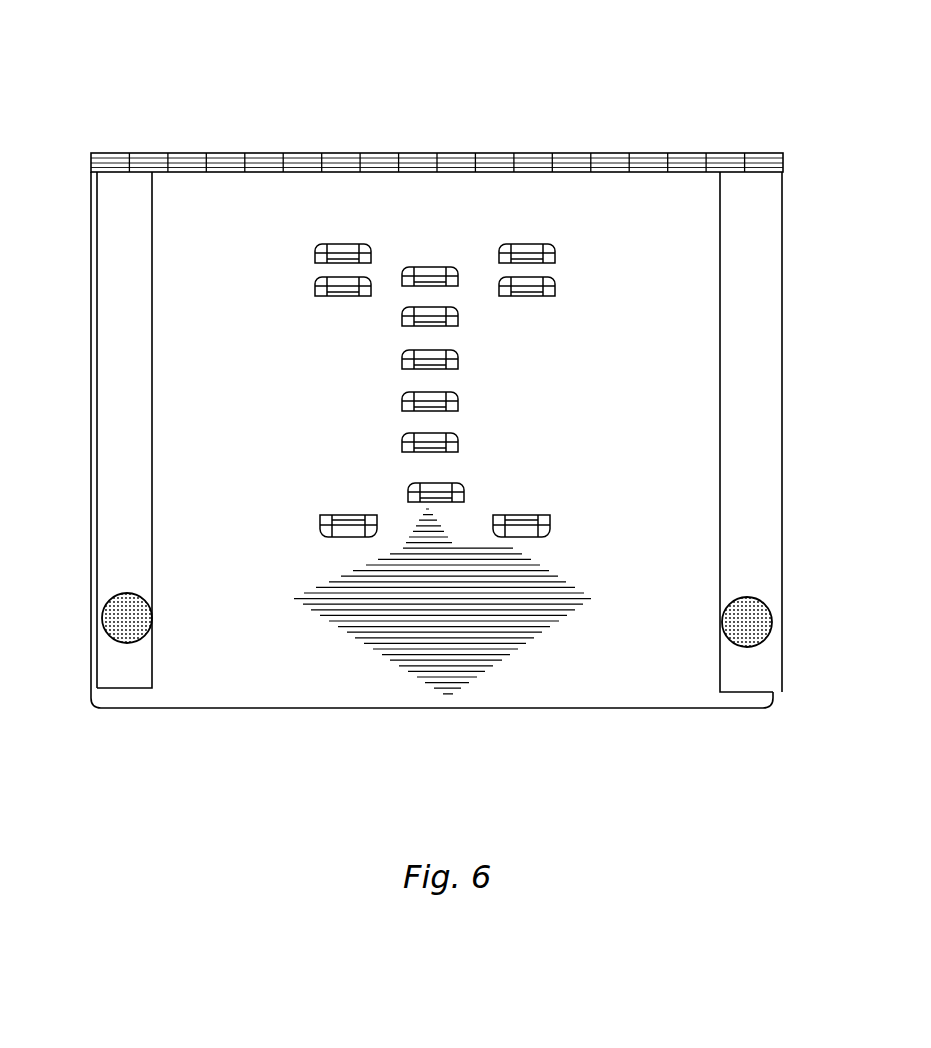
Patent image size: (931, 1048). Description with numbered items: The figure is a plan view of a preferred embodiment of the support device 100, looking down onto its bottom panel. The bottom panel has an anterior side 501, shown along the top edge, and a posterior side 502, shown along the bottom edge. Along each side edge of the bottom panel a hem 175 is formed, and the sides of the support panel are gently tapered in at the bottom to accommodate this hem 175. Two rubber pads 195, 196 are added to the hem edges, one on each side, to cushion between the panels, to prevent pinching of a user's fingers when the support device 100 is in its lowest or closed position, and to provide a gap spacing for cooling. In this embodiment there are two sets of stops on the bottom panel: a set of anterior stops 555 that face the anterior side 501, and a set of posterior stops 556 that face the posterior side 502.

The support device 100 is at (198, 85).
The anterior side 501 is at (427, 185).
The posterior side 502 is at (235, 710).
The hem 175 is at (112, 350).
The rubber pad 195 is at (115, 620).
The rubber pad 196 is at (766, 622).
The anterior stops 555 is at (335, 520).
The posterior stops 556 is at (330, 280).